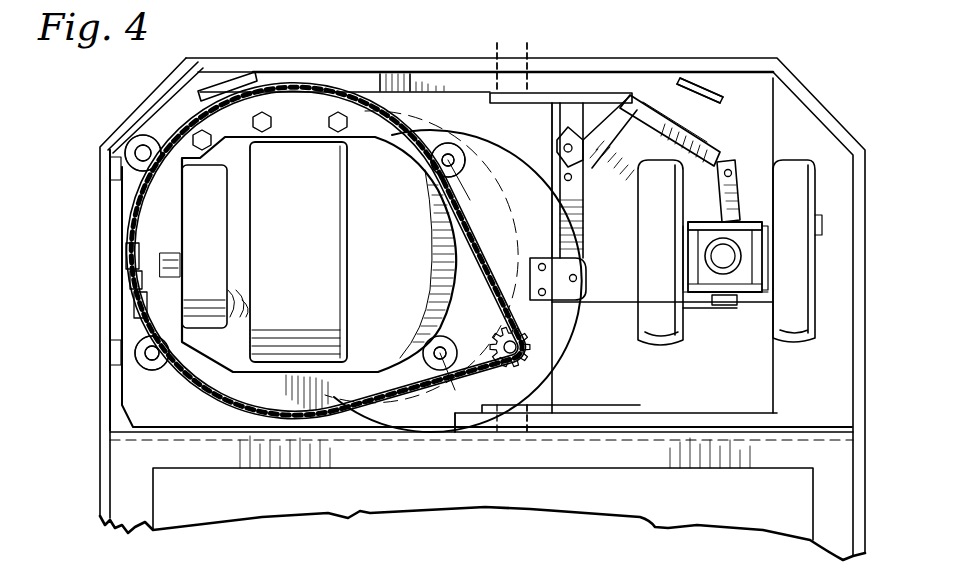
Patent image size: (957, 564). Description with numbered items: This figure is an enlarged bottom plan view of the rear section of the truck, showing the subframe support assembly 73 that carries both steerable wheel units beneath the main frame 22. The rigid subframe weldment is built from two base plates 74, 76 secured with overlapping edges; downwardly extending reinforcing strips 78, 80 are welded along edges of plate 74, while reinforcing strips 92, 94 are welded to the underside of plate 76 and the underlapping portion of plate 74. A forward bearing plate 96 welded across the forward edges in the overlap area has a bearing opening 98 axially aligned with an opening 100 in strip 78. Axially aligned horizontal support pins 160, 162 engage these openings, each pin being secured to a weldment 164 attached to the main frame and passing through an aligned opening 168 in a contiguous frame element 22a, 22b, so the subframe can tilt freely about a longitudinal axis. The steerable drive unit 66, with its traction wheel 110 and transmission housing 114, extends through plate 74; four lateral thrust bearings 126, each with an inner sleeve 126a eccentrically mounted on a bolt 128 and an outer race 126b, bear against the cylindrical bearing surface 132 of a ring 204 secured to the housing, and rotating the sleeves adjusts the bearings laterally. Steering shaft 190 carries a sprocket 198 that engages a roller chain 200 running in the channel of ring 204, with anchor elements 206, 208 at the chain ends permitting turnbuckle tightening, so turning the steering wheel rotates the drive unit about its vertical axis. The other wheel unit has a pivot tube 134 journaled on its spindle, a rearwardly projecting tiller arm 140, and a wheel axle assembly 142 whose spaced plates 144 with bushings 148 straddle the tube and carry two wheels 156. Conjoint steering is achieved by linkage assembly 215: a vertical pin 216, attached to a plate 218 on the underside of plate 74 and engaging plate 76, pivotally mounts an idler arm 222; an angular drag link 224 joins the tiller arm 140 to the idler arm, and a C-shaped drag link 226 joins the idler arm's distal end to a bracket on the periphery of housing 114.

The main frame 22 is at (306, 57).
The contiguous main frame element 22a is at (462, 70).
The contiguous main frame element 22b is at (583, 433).
The steerable drive unit 66 is at (373, 412).
The subframe support assembly 73 is at (108, 249).
The base plate 74 is at (190, 88).
The base plate 76 is at (750, 72).
The reinforcing strip 78 is at (402, 77).
The reinforcing strip 80 is at (128, 280).
The reinforcing strip 92 is at (658, 97).
The reinforcing strip 94 is at (592, 305).
The forward bearing plate 96 is at (472, 423).
The bearing opening 98 is at (522, 430).
The opening 100 is at (527, 90).
The traction wheel 110 is at (253, 252).
The housing 114 is at (382, 271).
The lateral thrust bearing 126 is at (134, 150).
The inner sleeve 126a is at (130, 166).
The outer race 126b is at (126, 145).
The bolt 128 is at (126, 154).
The cylindrical bearing surface 132 is at (122, 205).
The pivot tube 134 is at (688, 252).
The tiller arm 140 is at (745, 165).
The wheel axle assembly 142 is at (750, 300).
The plate 144 is at (690, 226).
The bushing 148 is at (700, 296).
The wheel 156 is at (648, 337).
The support pin 160 is at (507, 457).
The support pin 162 is at (497, 45).
The weldment 164 is at (570, 100).
The aligned opening 168 is at (527, 53).
The shaft 190 is at (535, 348).
The sprocket 198 is at (545, 362).
The roller chain 200 is at (340, 418).
The ring 204 is at (280, 392).
The anchor element 206 is at (125, 258).
The anchor element 208 is at (130, 302).
The linkage assembly 215 is at (678, 98).
The vertical pin 216 is at (585, 278).
The plate 218 is at (531, 262).
The idler arm 222 is at (562, 209).
The angular drag link 224 is at (685, 118).
The C-shaped drag link 226 is at (552, 132).